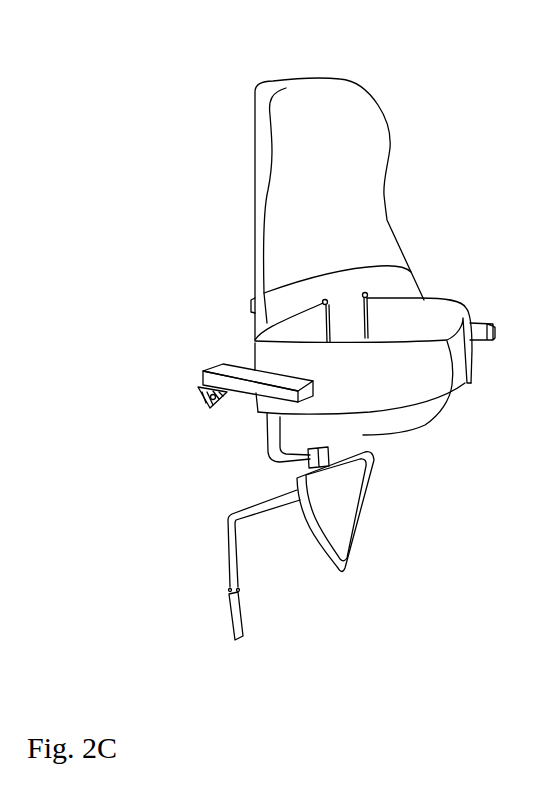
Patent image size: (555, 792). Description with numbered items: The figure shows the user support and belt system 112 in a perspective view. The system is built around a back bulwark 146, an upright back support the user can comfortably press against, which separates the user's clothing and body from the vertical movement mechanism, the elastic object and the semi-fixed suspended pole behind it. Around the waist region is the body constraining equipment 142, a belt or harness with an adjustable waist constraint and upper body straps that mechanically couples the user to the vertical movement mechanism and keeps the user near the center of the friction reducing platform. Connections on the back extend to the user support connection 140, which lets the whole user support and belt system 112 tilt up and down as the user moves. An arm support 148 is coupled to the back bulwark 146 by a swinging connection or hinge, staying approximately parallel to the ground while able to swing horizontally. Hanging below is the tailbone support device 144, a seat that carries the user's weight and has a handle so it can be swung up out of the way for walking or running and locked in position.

The user support and belt system 112 is at (320, 333).
The user support connection 140 is at (253, 308).
The body constraining equipment 142 is at (455, 302).
The tailbone support device 144 is at (360, 531).
The back bulwark 146 is at (255, 167).
The arm support 148 is at (240, 400).